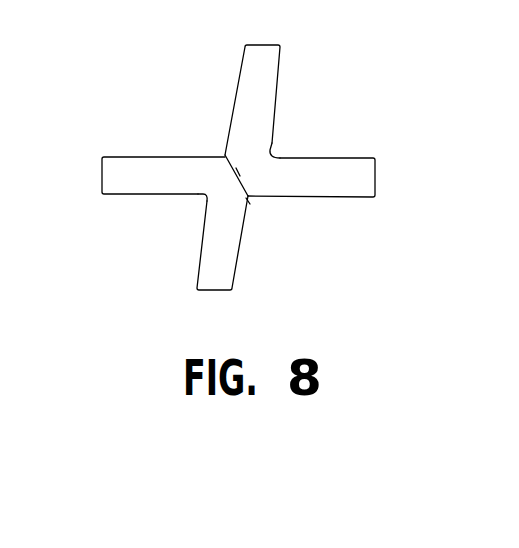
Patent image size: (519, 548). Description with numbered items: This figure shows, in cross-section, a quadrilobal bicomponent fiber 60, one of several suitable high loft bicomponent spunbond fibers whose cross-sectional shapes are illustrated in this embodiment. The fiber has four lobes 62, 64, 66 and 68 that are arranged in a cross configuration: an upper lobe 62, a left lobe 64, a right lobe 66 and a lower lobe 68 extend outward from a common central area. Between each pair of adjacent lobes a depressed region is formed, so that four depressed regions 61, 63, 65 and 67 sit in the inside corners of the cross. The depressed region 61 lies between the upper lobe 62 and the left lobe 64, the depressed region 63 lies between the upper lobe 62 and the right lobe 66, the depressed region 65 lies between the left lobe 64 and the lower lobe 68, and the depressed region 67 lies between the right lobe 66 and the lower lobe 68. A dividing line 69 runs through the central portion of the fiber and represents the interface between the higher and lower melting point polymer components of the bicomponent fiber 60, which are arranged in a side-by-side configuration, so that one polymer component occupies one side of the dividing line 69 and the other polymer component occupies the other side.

The quadrilobal bicomponent fiber 60 is at (238, 162).
The depressed region 61 is at (213, 157).
The lobe 62 is at (262, 57).
The depressed region 63 is at (270, 147).
The lobe 64 is at (112, 170).
The depressed region 65 is at (203, 218).
The lobe 66 is at (366, 175).
The depressed region 67 is at (250, 205).
The lobe 68 is at (226, 262).
The dividing line 69 is at (237, 170).